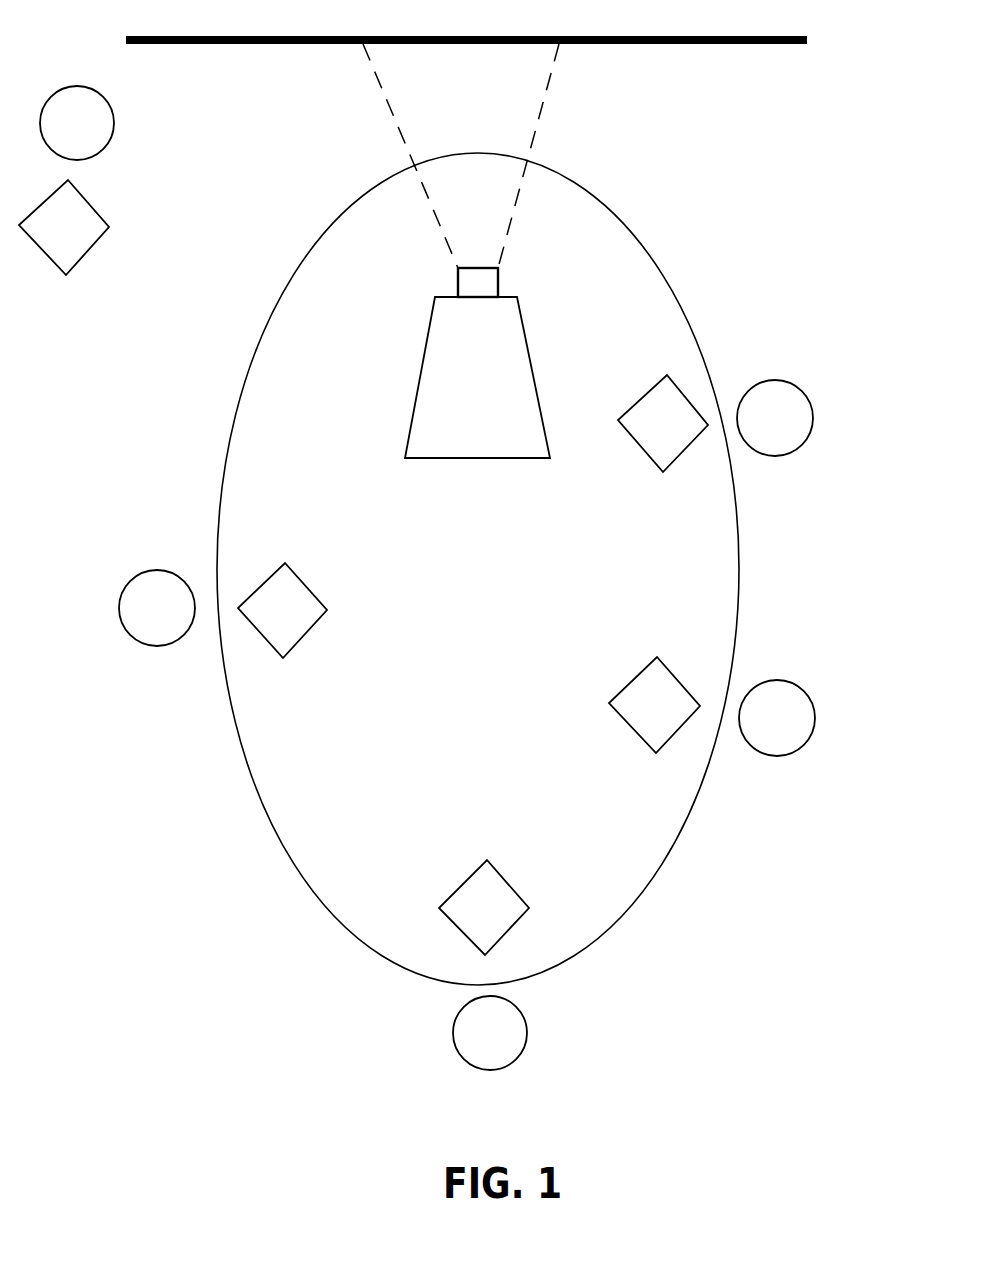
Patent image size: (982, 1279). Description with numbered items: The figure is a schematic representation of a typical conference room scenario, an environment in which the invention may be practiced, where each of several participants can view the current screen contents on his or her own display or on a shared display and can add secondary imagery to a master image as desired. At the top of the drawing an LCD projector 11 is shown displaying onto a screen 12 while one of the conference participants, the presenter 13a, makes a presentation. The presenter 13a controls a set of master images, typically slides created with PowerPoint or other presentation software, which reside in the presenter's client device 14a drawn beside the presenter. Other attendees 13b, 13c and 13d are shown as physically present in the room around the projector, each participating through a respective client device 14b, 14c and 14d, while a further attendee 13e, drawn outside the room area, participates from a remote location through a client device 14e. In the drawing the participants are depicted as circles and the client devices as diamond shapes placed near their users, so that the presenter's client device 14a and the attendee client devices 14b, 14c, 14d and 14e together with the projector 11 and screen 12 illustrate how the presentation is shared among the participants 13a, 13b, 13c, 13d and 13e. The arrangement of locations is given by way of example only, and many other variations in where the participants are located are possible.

The LCD projector 11 is at (490, 385).
The screen 12 is at (807, 37).
The presenter 13a is at (807, 397).
The attendee 13b is at (810, 697).
The attendee 13c is at (529, 1032).
The attendee 13d is at (135, 640).
The attendee 13e is at (108, 103).
The presenter's client device 14a is at (647, 450).
The client device 14b is at (615, 712).
The client device 14c is at (462, 883).
The client device 14d is at (305, 585).
The client device 14e is at (82, 260).